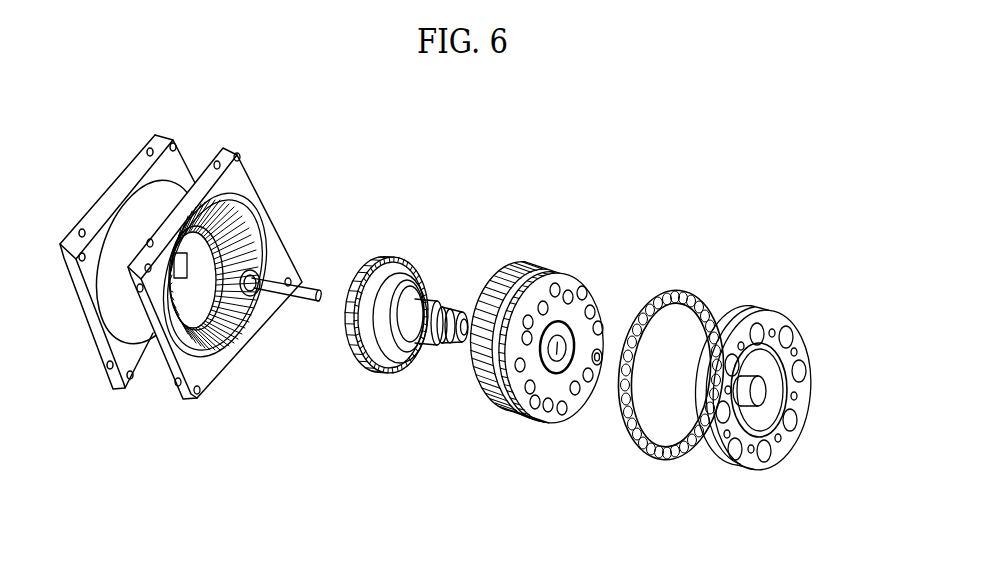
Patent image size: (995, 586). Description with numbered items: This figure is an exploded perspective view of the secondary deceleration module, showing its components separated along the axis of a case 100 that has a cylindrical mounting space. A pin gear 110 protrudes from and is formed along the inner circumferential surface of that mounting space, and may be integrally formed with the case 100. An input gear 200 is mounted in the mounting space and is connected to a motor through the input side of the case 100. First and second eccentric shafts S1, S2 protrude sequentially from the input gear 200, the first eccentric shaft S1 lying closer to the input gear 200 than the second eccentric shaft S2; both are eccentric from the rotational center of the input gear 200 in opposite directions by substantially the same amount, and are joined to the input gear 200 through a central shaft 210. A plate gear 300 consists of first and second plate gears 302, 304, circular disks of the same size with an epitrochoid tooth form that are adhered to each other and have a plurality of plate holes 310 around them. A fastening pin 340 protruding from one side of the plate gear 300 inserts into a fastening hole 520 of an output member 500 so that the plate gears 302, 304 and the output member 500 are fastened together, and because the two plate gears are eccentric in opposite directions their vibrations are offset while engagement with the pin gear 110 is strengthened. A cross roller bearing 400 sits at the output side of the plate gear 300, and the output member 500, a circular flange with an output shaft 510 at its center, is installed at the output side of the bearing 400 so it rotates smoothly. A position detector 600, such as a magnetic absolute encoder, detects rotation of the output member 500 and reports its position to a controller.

The case 100 is at (182, 399).
The pin gear 110 is at (250, 210).
The position detector 600 is at (300, 280).
The input gear 200 is at (406, 364).
The central shaft 210 is at (413, 260).
The first eccentric shaft S1 is at (428, 346).
The second eccentric shaft S2 is at (447, 308).
The plate gear 300 is at (550, 320).
The first plate gear 302 is at (493, 267).
The second plate gear 304 is at (567, 265).
The plate holes 310 is at (552, 406).
The fastening pin 340 is at (600, 362).
The cross roller bearing 400 is at (700, 290).
The output member 500 is at (780, 386).
The output shaft 510 is at (762, 392).
The fastening hole 520 is at (750, 455).